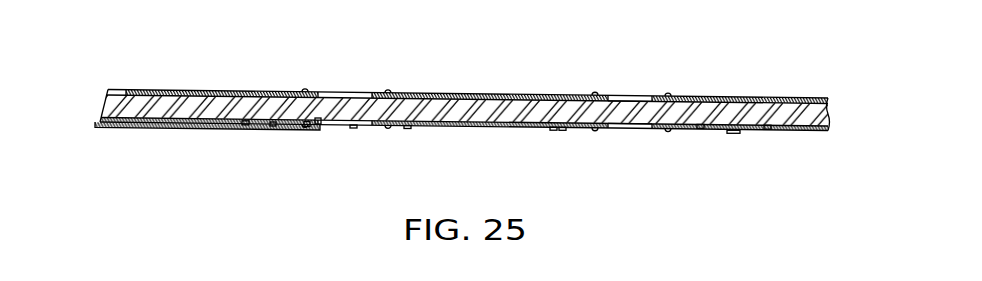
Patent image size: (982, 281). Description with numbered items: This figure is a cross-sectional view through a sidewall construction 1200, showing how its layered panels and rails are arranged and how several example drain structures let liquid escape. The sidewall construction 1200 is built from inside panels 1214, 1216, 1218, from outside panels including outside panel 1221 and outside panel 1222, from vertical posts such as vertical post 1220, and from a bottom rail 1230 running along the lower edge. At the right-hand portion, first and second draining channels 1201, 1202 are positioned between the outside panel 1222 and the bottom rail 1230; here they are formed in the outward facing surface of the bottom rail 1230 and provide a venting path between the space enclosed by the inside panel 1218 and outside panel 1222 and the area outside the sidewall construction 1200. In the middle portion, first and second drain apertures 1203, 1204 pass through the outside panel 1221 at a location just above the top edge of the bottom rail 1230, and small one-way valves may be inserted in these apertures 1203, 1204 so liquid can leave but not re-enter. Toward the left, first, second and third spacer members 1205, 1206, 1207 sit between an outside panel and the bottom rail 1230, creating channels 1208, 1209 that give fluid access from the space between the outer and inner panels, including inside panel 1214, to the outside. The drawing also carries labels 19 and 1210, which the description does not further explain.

The sidewall construction 1200 is at (379, 76).
The distal end 19 is at (100, 127).
The inside panel 1214 is at (190, 90).
The inside panel 1216 is at (518, 94).
The inside panel 1218 is at (785, 100).
The bottom rail 1230 is at (460, 107).
The first spacer member 1205 is at (125, 124).
The channel 1208 is at (205, 126).
The second spacer member 1206 is at (245, 125).
The channel 1209 is at (273, 127).
The coupling segment 1207 is at (307, 128).
The coupling segment end 1210 is at (318, 123).
The outside panel 1222 is at (353, 125).
The first drain aperture 1203 is at (407, 125).
The outside panel 1221 is at (553, 125).
The second drain aperture 1204 is at (562, 128).
The vertical post 1220 is at (632, 129).
The first draining channel 1201 is at (700, 122).
The second draining channel 1202 is at (767, 128).